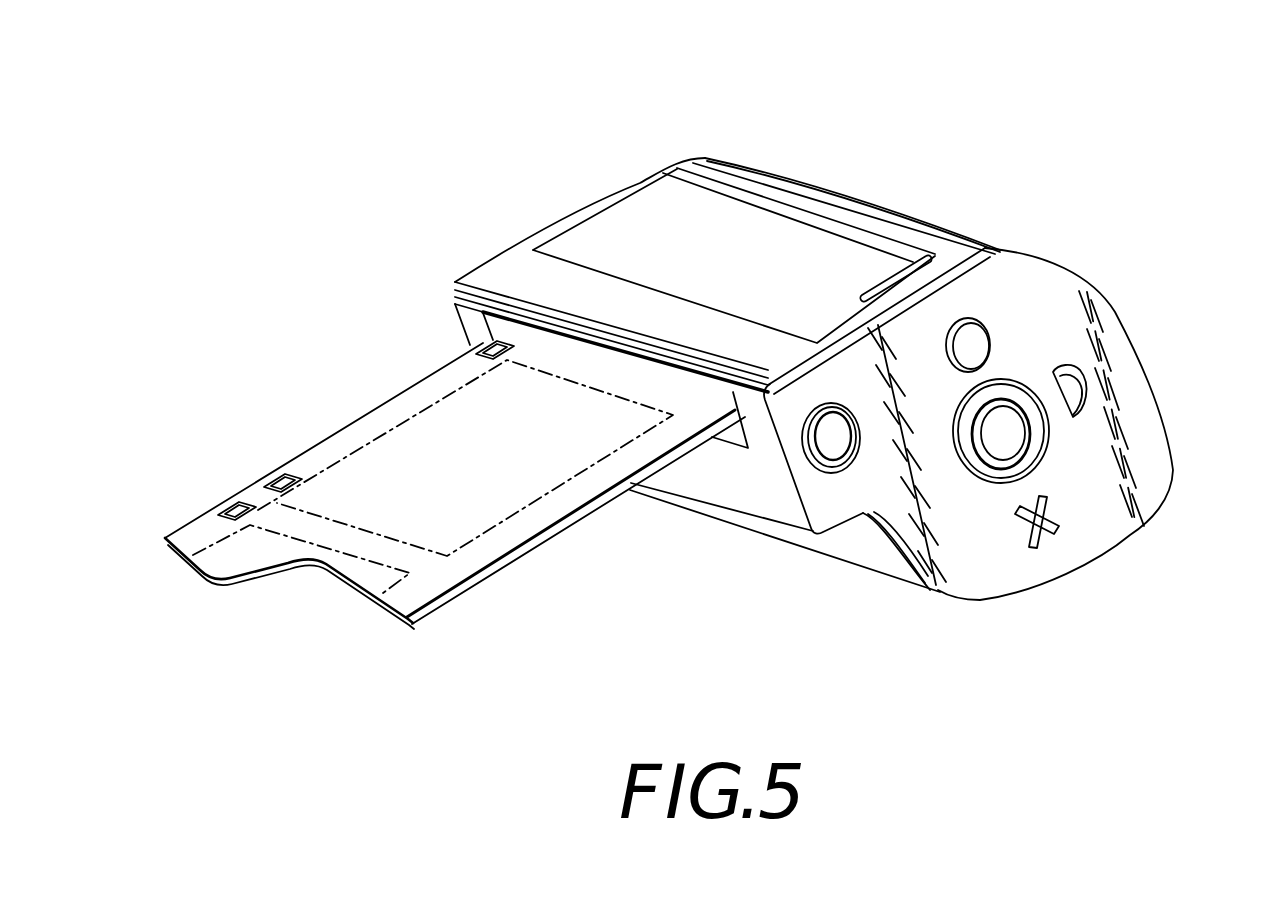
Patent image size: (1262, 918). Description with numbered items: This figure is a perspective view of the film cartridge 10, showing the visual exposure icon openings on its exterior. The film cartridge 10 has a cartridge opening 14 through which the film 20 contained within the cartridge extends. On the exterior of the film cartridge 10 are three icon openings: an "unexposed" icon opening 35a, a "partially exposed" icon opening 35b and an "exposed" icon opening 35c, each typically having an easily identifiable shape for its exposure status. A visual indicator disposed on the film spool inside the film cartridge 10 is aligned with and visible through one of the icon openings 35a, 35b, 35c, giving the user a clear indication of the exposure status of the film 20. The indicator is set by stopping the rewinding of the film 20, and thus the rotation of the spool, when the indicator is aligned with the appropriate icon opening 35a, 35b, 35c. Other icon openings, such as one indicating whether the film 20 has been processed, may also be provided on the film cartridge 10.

The film cartridge 10 is at (850, 184).
The cartridge opening 14 is at (730, 436).
The film 20 is at (400, 417).
The "unexposed" icon opening 35a is at (972, 318).
The "partially exposed" icon opening 35b is at (1062, 368).
The "exposed" icon opening 35c is at (1052, 530).